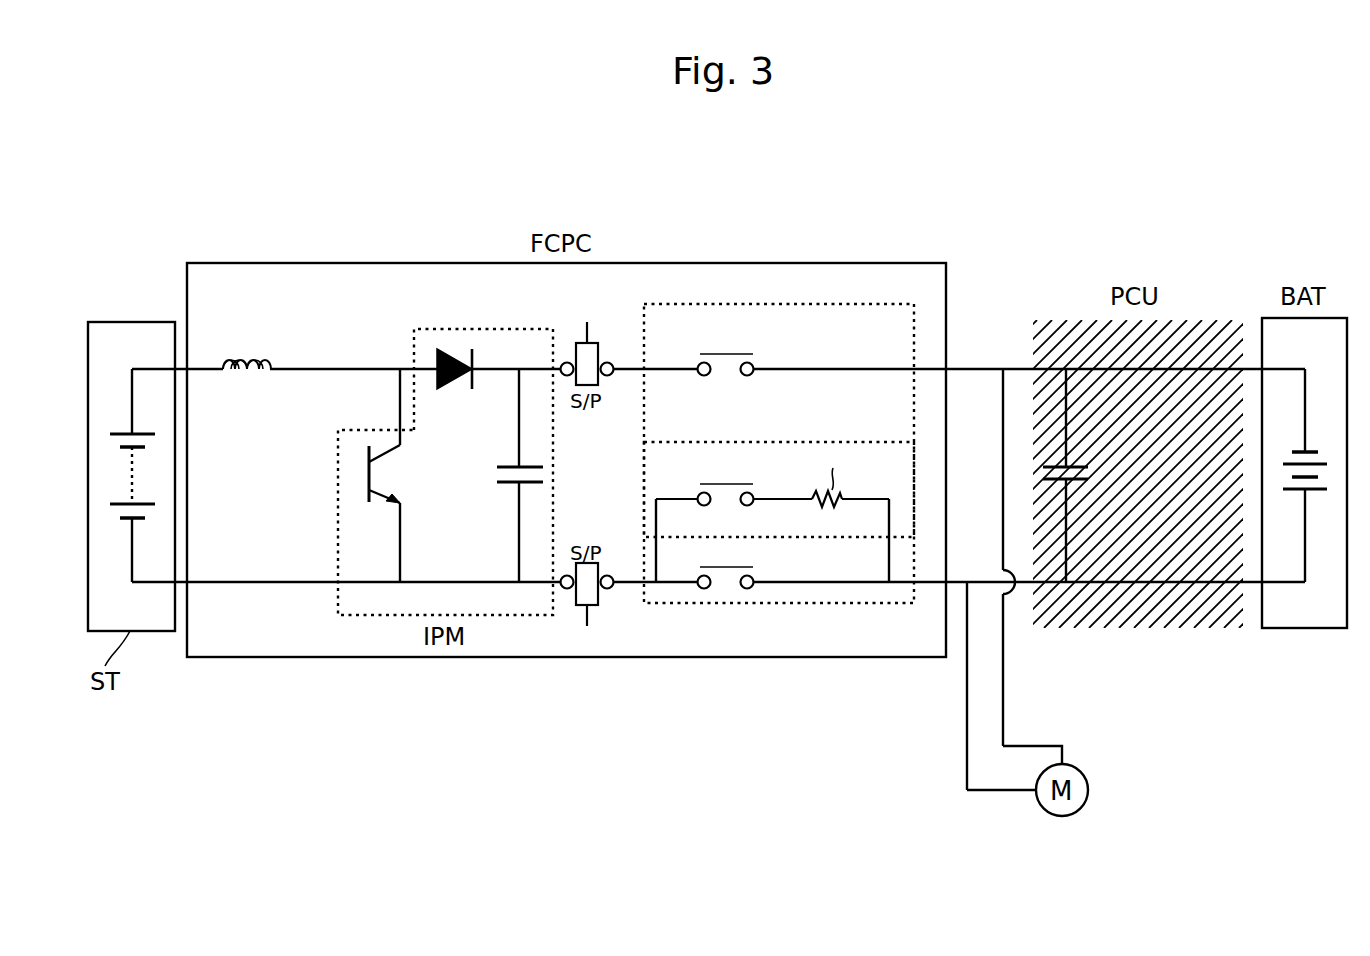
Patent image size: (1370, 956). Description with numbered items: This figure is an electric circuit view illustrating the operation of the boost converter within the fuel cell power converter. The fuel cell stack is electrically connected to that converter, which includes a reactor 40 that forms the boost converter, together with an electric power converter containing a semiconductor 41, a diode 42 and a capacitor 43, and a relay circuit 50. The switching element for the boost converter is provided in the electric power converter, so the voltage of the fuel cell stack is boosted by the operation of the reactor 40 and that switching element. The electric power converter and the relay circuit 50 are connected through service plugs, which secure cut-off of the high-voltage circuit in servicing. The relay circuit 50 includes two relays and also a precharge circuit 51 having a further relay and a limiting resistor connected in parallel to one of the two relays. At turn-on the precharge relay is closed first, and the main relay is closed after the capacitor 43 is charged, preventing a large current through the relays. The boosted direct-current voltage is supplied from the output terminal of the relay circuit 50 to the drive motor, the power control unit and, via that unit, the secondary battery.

The reactor 40 is at (250, 360).
The semiconductor 41 is at (369, 492).
The diode 42 is at (455, 349).
The capacitor 43 is at (510, 488).
The relay circuit 50 is at (815, 304).
The precharge circuit 51 is at (773, 489).